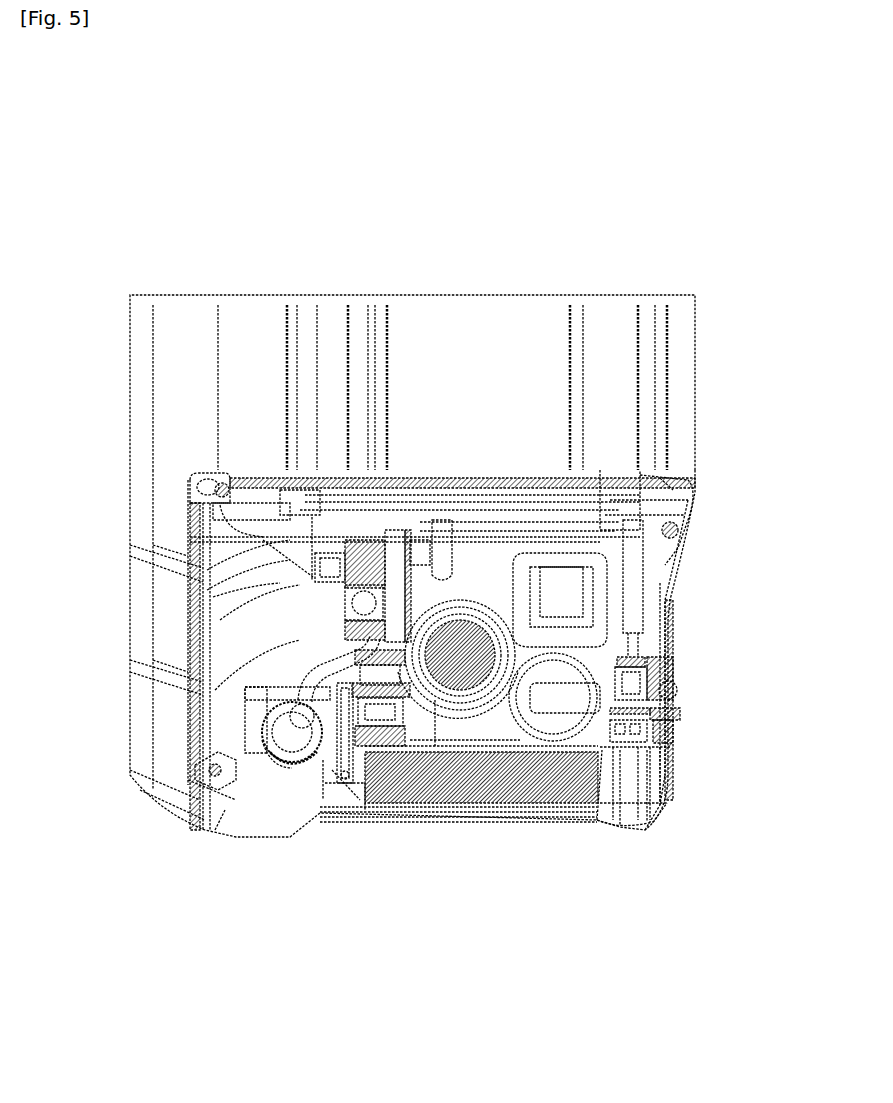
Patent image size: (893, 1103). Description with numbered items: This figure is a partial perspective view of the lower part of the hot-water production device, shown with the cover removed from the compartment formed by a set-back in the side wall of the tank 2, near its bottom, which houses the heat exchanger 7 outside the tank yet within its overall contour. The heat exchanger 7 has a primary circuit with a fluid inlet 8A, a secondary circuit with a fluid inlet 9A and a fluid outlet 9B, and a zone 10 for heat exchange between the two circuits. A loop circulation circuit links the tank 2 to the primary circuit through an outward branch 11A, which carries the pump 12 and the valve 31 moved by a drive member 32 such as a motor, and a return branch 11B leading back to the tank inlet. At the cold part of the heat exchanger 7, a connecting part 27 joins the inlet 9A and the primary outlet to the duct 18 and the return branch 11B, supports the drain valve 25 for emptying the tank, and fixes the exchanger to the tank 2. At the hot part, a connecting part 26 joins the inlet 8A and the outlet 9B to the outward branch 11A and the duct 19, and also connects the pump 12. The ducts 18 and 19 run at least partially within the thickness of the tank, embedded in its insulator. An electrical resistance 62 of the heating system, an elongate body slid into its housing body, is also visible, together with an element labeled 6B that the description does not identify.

The tank 2 is at (412, 566).
The outward branch 11A is at (200, 496).
The duct 18 is at (643, 560).
The duct 19 is at (322, 577).
The drive member 32 is at (345, 624).
The valve 31 is at (335, 660).
The pump 12 is at (282, 762).
The connecting part 26 is at (317, 815).
The fluid inlet of the primary circuit 8A is at (358, 803).
The fluid outlet of the secondary circuit 9B is at (390, 815).
The electrical resistance 62 is at (433, 815).
The drain valve 25 is at (672, 667).
The connecting part 27 is at (607, 709).
The fluid inlet of the secondary circuit 9A is at (673, 747).
The heat exchange zone 10 is at (498, 813).
The heat exchanger 7 is at (513, 813).
The return branch 11B is at (557, 815).
The lower support 6B is at (627, 830).